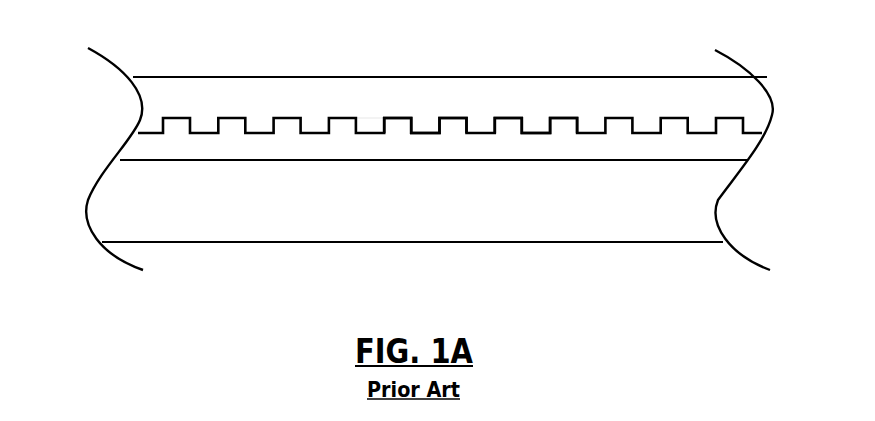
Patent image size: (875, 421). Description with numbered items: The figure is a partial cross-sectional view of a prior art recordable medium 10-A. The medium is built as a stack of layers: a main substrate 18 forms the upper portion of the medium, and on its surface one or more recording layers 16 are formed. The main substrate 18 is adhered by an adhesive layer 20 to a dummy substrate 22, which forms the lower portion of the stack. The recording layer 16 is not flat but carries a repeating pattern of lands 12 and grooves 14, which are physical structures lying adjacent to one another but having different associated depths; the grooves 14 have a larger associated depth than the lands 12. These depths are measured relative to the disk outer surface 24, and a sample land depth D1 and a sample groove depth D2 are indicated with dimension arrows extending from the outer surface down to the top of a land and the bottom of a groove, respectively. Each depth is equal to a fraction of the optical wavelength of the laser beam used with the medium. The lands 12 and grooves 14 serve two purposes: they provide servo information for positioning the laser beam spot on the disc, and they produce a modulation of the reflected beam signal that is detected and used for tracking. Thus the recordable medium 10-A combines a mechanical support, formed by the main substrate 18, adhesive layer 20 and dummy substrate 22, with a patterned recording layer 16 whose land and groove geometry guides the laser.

The recordable medium 10-A is at (460, 77).
The lands 12 is at (454, 106).
The grooves 14 is at (480, 118).
The recording layer 16 is at (743, 123).
The main substrate 18 is at (682, 106).
The adhesive layer 20 is at (753, 150).
The dummy substrate 22 is at (510, 213).
The disk outer surface 24 is at (366, 96).
The land depth D1 is at (317, 198).
The groove depth D2 is at (233, 27).